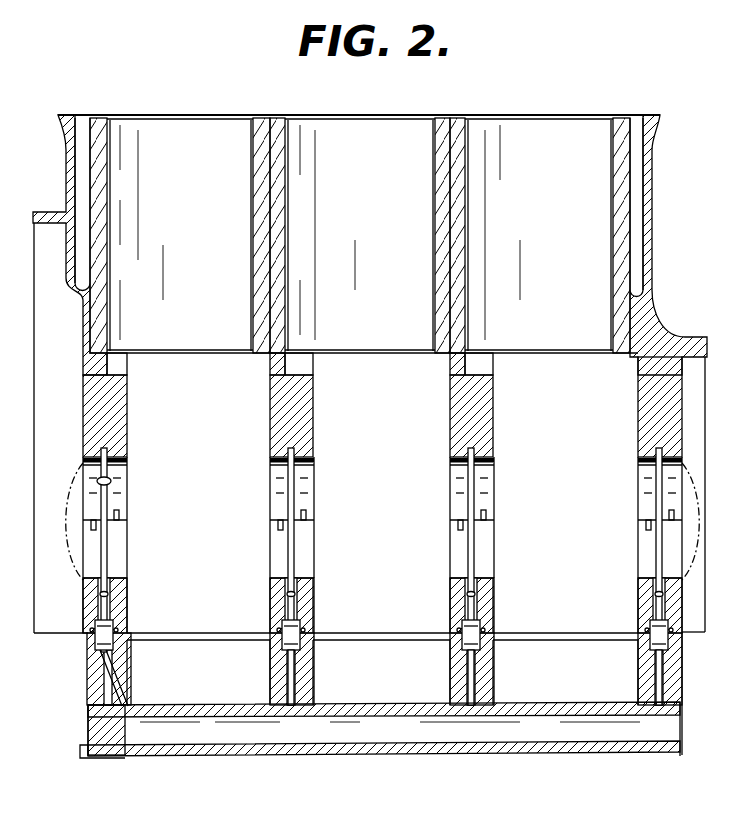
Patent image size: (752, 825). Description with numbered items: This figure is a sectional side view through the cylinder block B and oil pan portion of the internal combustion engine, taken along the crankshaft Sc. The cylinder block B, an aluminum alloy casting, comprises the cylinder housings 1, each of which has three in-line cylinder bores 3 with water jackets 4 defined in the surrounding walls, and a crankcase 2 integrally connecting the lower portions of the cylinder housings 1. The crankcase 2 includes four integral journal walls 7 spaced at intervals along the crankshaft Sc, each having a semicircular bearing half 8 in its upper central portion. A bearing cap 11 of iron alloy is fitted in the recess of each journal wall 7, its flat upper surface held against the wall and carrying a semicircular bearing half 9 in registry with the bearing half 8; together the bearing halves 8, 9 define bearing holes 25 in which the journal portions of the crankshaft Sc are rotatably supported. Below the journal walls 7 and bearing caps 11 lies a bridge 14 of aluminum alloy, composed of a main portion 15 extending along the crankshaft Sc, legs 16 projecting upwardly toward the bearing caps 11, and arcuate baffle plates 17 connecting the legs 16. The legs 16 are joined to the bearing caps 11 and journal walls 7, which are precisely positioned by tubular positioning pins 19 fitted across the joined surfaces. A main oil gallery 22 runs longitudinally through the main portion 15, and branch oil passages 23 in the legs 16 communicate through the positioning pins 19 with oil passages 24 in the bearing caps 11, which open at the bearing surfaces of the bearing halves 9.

The cylinder block B is at (494, 112).
The cylinder housing 1 is at (72, 183).
The crankcase 2 is at (683, 421).
The cylinder bore 3 is at (103, 181).
The water jacket 4 is at (80, 236).
The journal wall 7 is at (116, 420).
The bearing half 8 is at (124, 466).
The bearing half 9 is at (112, 585).
The bearing cap 11 is at (122, 604).
The bridge 14 is at (300, 755).
The main portion 15 is at (345, 745).
The leg 16 is at (120, 664).
The baffle plate 17 is at (198, 642).
The tubular positioning pin 19 is at (114, 624).
The main oil gallery 22 is at (222, 740).
The branch oil passage 23 is at (118, 692).
The oil passage 24 is at (108, 594).
The bearing hole 25 is at (417, 517).
The crankshaft Sc is at (694, 480).